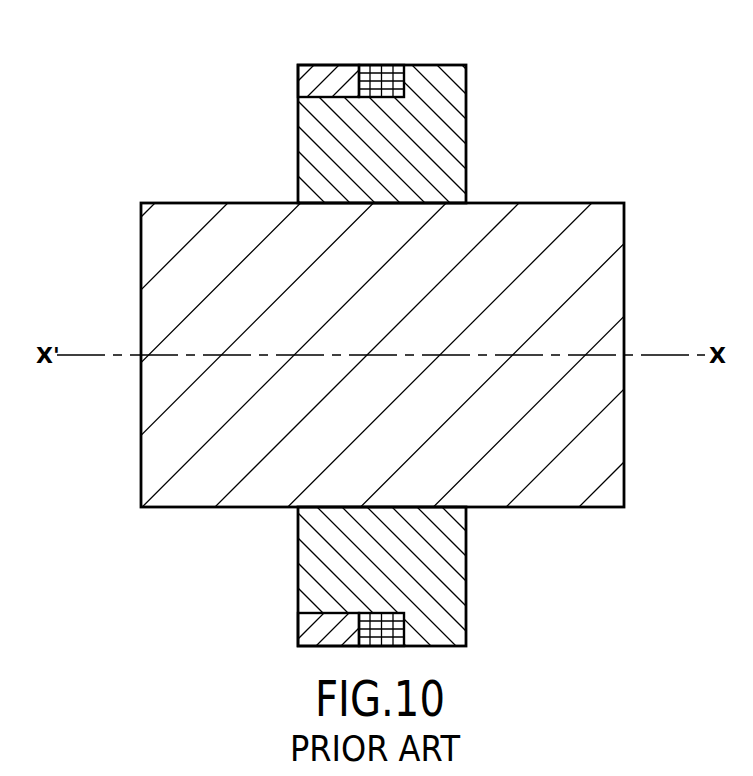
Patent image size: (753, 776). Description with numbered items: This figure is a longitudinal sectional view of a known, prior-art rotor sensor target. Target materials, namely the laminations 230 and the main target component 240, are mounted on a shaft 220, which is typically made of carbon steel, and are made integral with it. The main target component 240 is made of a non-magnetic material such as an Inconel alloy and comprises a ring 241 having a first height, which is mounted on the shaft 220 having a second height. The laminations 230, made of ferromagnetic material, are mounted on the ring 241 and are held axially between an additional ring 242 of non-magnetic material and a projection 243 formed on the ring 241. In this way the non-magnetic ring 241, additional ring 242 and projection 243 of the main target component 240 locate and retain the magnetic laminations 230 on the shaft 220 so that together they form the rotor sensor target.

The shaft 220 is at (141, 251).
The main target component 240 is at (474, 131).
The ring 241 is at (325, 134).
The additional ring 242 is at (323, 73).
The projection 243 is at (435, 78).
The laminations 230 is at (382, 78).